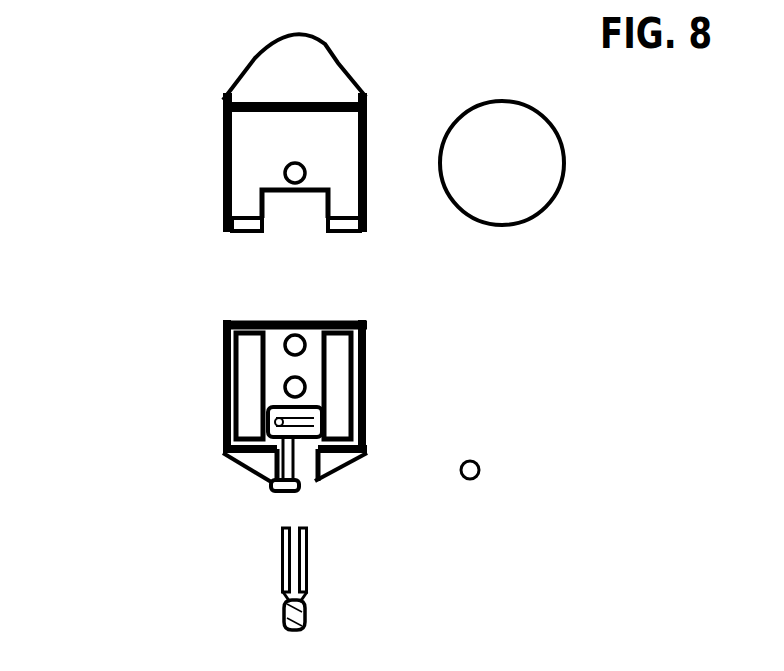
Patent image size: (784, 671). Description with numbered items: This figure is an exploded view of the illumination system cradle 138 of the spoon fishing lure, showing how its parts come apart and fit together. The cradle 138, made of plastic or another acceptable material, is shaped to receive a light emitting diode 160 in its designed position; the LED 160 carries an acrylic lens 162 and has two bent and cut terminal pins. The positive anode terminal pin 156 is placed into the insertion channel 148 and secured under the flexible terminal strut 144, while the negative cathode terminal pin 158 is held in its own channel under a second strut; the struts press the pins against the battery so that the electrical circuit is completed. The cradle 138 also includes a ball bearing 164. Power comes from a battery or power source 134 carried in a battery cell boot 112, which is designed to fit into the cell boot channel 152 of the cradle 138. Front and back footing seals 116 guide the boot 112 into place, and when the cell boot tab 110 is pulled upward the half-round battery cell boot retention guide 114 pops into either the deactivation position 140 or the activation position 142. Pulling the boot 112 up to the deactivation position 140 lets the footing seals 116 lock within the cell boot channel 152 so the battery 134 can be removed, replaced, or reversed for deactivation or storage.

The cell boot tab 110 is at (295, 75).
The battery cell boot 112 is at (260, 135).
The battery cell boot retention guide 114 is at (290, 173).
The footing seals 116 is at (232, 228).
The battery or power source 134 is at (503, 165).
The illumination system cradle 138 is at (295, 322).
The deactivation position 140 is at (292, 345).
The activation position 142 is at (292, 387).
The flexible terminal strut 144 is at (322, 421).
The insertion channel 148 is at (272, 453).
The cell boot channel 152 is at (245, 423).
The positive anode terminal pin 156 is at (283, 575).
The negative cathode terminal pin 158 is at (307, 560).
The light emitting diode (LED) 160 is at (305, 613).
The acrylic lens 162 is at (283, 628).
The ball bearing 164 is at (479, 469).